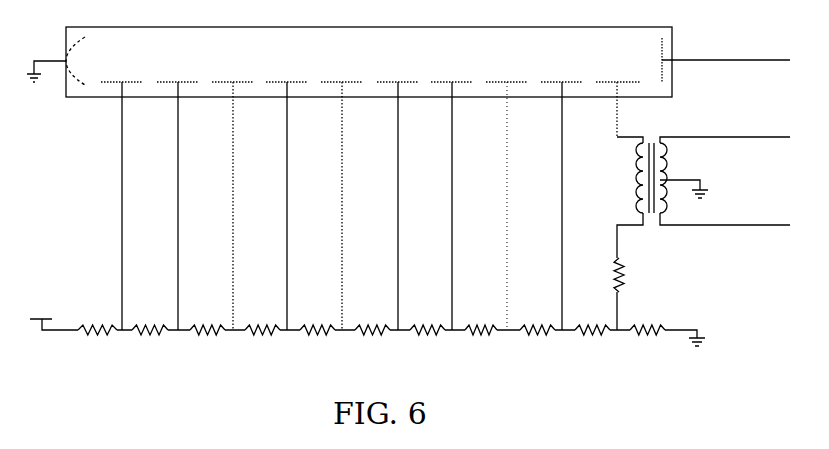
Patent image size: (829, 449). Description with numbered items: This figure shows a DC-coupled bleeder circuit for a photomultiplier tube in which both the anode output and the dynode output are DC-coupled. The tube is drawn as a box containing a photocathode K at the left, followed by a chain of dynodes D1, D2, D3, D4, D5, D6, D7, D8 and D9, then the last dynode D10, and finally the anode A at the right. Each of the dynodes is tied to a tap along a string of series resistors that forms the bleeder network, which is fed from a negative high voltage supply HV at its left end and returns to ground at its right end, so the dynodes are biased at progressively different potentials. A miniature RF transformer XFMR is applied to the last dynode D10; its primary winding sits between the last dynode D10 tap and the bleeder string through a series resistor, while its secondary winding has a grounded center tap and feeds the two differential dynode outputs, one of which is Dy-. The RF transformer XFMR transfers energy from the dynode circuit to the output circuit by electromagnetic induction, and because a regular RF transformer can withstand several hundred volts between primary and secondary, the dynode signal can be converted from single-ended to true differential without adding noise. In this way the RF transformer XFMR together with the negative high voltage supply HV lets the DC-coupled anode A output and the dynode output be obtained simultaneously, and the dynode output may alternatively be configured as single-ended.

The photocathode K is at (56, 61).
The dynode 1 D1 is at (121, 197).
The dynode 2 D2 is at (177, 197).
The dynode 3 D3 is at (232, 197).
The dynode 4 D4 is at (287, 197).
The dynode 5 D5 is at (342, 197).
The dynode 6 D6 is at (398, 197).
The dynode 7 D7 is at (452, 197).
The dynode 8 D8 is at (507, 197).
The dynode 9 D9 is at (562, 197).
The last dynode D10 is at (619, 195).
The anode A is at (721, 60).
The RF transformer XFMR is at (671, 164).
The differential dynode output Dy- is at (736, 211).
The negative high voltage supply HV is at (362, 319).